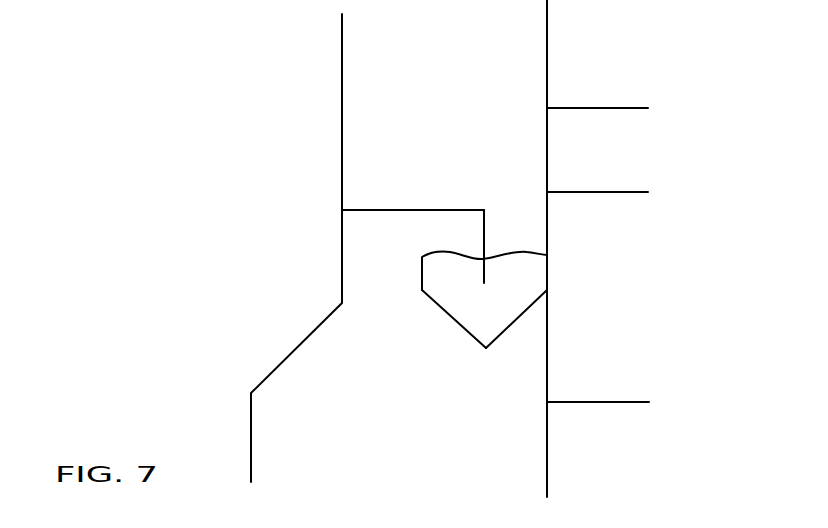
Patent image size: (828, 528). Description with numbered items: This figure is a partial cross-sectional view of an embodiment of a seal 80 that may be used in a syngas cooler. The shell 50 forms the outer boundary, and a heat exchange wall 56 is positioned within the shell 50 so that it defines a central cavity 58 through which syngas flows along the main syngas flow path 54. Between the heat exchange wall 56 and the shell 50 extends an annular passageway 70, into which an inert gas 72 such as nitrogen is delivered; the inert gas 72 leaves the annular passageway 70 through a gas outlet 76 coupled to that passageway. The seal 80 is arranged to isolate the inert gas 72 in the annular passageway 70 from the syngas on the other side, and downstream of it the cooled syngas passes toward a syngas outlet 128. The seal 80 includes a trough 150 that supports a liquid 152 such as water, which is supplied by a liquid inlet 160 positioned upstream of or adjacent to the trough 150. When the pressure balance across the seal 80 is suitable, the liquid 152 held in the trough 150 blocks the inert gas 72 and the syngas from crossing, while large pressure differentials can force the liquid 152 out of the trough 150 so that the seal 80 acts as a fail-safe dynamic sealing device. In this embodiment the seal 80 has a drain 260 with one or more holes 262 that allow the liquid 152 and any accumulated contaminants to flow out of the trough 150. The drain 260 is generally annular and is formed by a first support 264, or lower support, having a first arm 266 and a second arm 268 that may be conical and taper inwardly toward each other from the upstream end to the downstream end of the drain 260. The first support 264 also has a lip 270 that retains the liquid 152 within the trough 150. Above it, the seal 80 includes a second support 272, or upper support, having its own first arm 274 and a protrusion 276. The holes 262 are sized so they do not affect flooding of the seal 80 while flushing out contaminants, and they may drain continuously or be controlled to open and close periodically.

The shell 50 is at (548, 46).
The main syngas flow path 54 is at (263, 234).
The heat exchange wall 56 is at (342, 46).
The central cavity 58 is at (264, 68).
The annular passageway 70 is at (349, 89).
The inert gas 72 is at (459, 70).
The gas outlet 76 is at (598, 108).
The seal 80 is at (557, 249).
The syngas outlet 128 is at (605, 402).
The trough 150 is at (528, 316).
The liquid 152 is at (498, 288).
The liquid inlet 160 is at (607, 192).
The drain 260 is at (450, 332).
The holes 262 is at (487, 349).
The first support 264 is at (413, 293).
The first arm 266 is at (507, 332).
The second arm 268 is at (433, 302).
The lip 270 is at (422, 272).
The second support 272 is at (392, 199).
The first arm 274 is at (447, 210).
The protrusion 276 is at (487, 237).